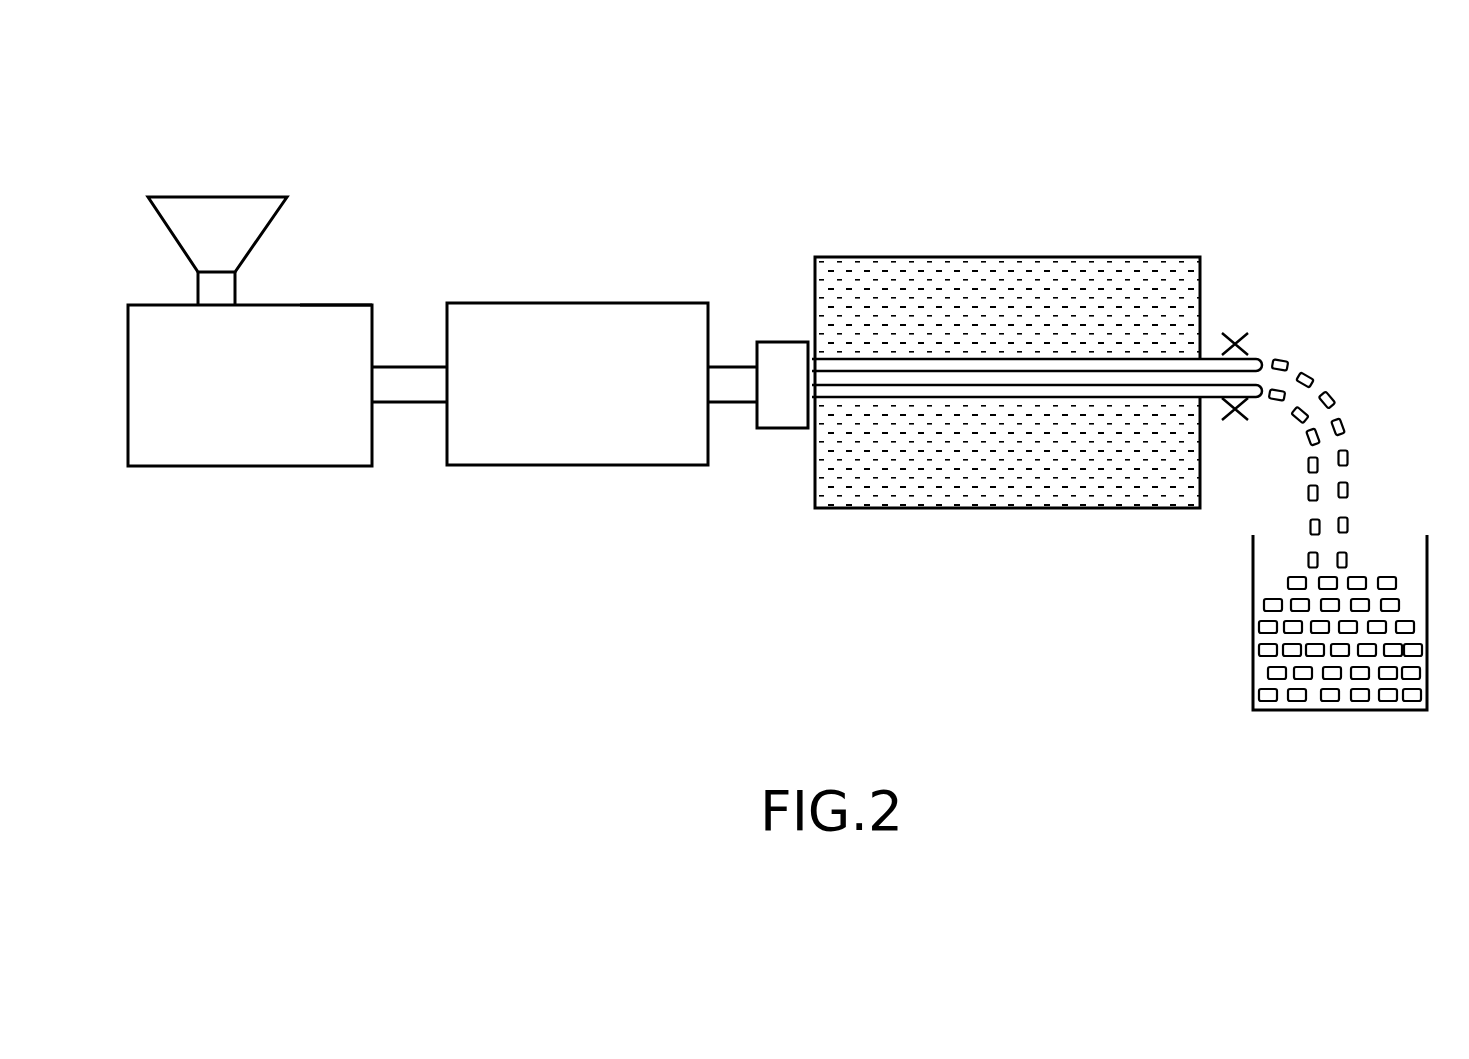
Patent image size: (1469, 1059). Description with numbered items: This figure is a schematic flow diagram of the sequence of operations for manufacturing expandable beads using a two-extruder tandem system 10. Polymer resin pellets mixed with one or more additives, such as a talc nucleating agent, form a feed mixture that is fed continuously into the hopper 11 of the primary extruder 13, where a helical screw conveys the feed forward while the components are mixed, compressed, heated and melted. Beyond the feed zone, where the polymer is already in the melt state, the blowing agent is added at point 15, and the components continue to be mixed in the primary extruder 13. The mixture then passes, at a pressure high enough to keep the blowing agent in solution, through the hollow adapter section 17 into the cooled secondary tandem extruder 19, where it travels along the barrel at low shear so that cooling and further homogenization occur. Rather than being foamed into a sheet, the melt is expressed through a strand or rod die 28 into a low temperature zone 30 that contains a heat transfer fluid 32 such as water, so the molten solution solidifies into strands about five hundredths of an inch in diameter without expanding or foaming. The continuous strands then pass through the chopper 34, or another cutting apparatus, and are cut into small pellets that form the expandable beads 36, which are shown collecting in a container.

The two-extruder tandem system 10 is at (708, 562).
The hopper 11 is at (226, 197).
The primary extruder 13 is at (247, 468).
The blowing agent injection point 15 is at (330, 303).
The hollow adapter section 17 is at (415, 362).
The secondary tandem extruder 19 is at (574, 467).
The strand or rod die 28 is at (783, 342).
The low temperature zone 30 is at (1037, 311).
The heat transfer fluid 32 is at (1103, 293).
The chopper 34 is at (1237, 333).
The expandable beads 36 is at (1350, 462).